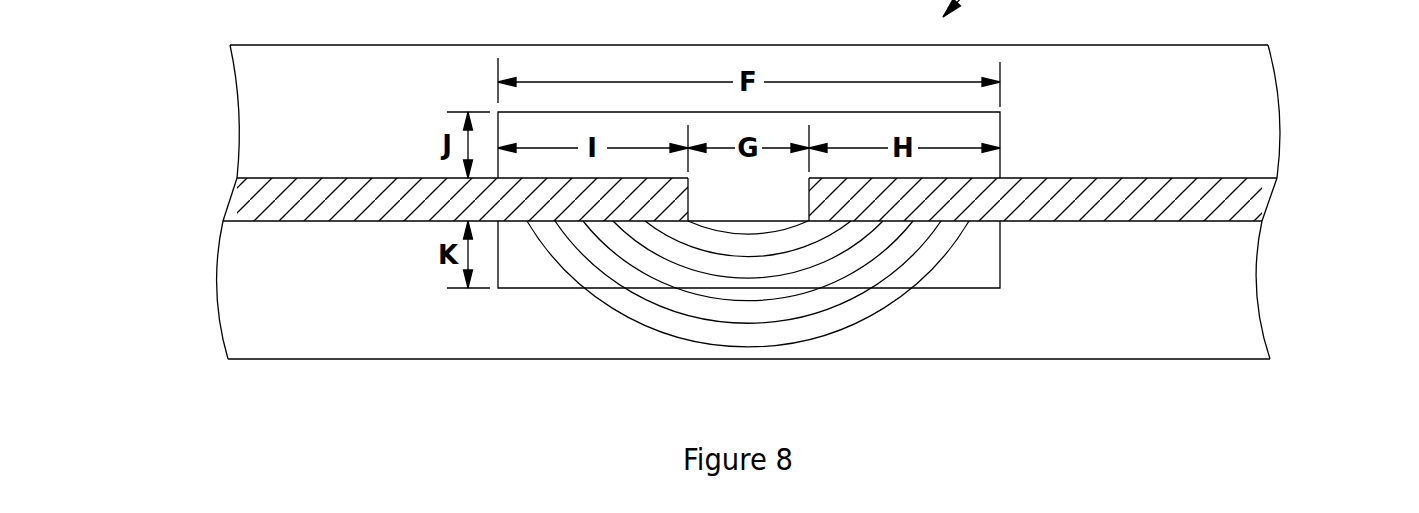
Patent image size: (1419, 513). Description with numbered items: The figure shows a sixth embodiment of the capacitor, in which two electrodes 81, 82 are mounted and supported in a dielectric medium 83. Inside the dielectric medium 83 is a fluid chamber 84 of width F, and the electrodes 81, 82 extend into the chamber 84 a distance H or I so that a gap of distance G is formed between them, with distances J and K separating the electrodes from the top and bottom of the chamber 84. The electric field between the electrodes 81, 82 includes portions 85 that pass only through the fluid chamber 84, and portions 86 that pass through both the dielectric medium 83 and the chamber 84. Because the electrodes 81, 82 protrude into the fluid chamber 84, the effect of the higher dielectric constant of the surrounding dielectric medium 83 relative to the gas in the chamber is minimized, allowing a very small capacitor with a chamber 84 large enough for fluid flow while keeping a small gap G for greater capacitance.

The electrode 81 is at (408, 180).
The electrode 82 is at (1099, 189).
The dielectric medium 83 is at (1146, 119).
The fluid chamber 84 is at (712, 224).
The electric field portions extending only through the fluid chamber 85 is at (817, 245).
The electric field portions extending through dielectric and chamber 86 is at (813, 313).